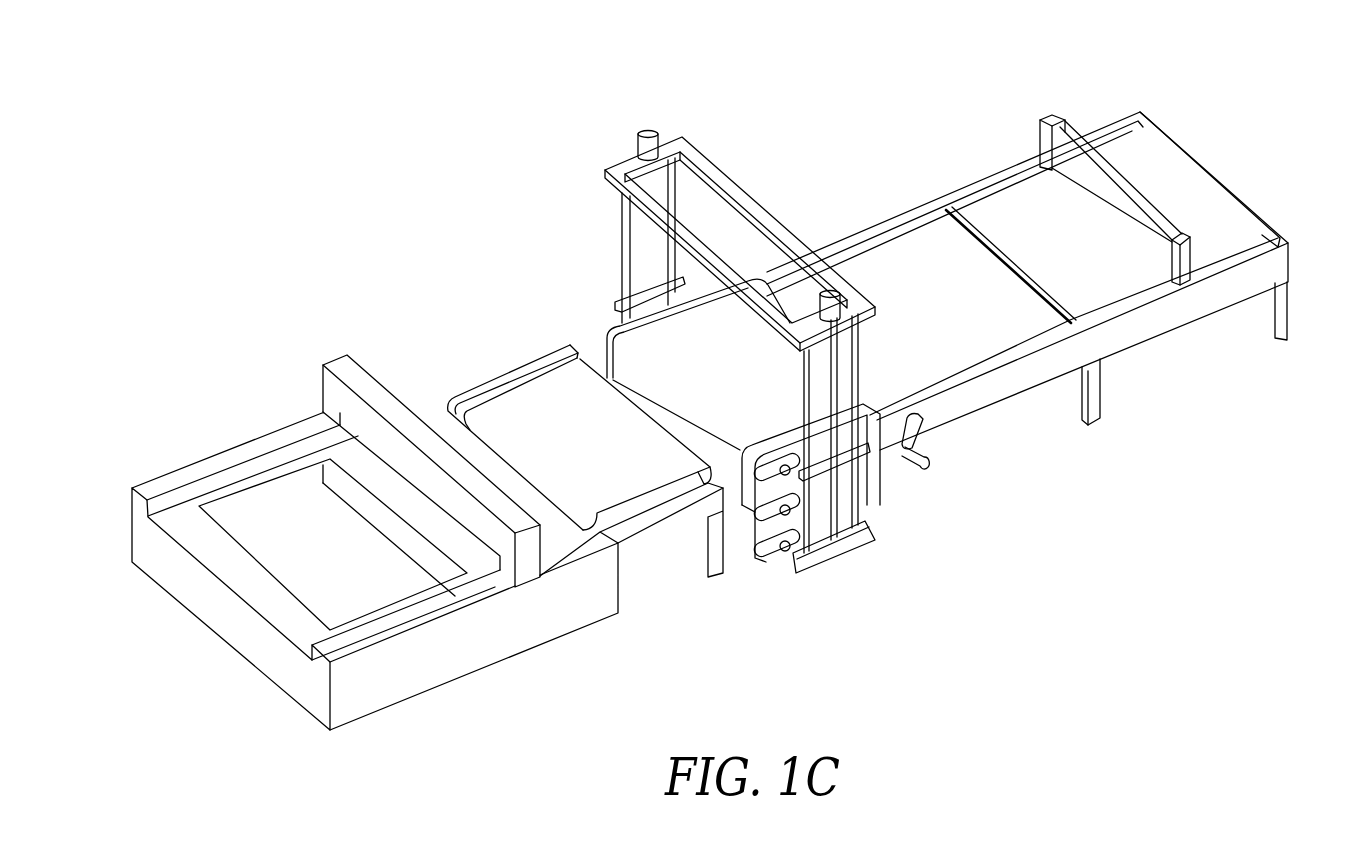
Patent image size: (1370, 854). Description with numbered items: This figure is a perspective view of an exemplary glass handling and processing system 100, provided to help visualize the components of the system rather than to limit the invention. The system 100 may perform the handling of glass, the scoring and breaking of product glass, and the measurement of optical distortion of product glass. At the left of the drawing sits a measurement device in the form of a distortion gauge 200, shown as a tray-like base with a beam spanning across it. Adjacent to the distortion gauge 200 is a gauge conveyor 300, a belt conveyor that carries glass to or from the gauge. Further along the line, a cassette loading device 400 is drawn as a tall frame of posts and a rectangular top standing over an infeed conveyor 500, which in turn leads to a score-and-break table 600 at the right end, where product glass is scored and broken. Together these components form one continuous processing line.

The system 100 is at (483, 96).
The distortion gauge 200 is at (562, 674).
The gauge conveyor 300 is at (703, 612).
The cassette loading device 400 is at (508, 278).
The infeed conveyor 500 is at (1028, 478).
The score-and-break table 600 is at (1188, 393).